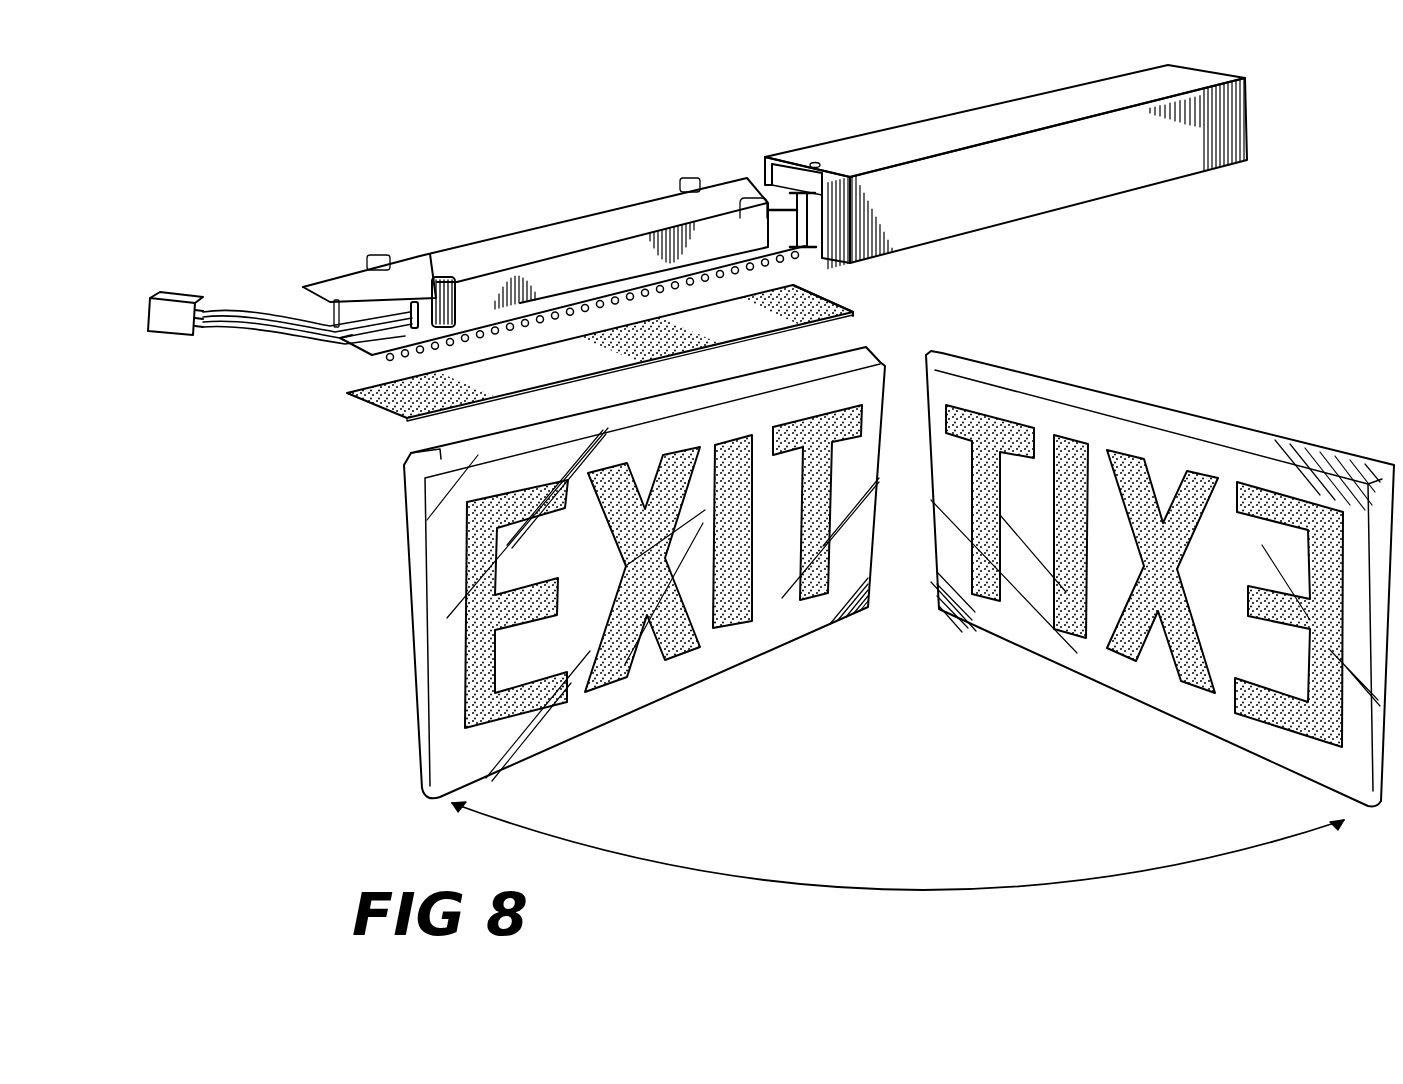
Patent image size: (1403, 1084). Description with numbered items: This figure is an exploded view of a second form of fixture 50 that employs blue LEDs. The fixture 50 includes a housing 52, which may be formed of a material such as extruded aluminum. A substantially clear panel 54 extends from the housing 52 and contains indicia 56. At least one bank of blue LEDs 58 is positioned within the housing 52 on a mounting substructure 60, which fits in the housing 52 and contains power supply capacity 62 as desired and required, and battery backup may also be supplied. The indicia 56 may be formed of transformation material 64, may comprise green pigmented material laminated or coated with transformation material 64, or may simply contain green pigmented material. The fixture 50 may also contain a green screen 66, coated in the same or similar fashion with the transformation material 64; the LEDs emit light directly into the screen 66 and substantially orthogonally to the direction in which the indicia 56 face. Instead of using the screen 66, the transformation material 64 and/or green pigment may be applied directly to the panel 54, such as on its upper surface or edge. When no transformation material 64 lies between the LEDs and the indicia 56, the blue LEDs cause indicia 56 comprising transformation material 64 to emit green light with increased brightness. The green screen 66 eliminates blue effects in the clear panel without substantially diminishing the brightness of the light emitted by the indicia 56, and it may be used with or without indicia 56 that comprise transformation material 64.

The fixture 50 is at (1148, 300).
The housing 52 is at (1031, 202).
The substantially clear panel 54 is at (684, 678).
The indicia 56 is at (822, 594).
The bank of blue LEDs 58 is at (803, 252).
The mounting substructure 60 is at (814, 161).
The power supply capacity 62 is at (236, 312).
The transformation material 64 is at (731, 338).
The green screen 66 is at (850, 324).